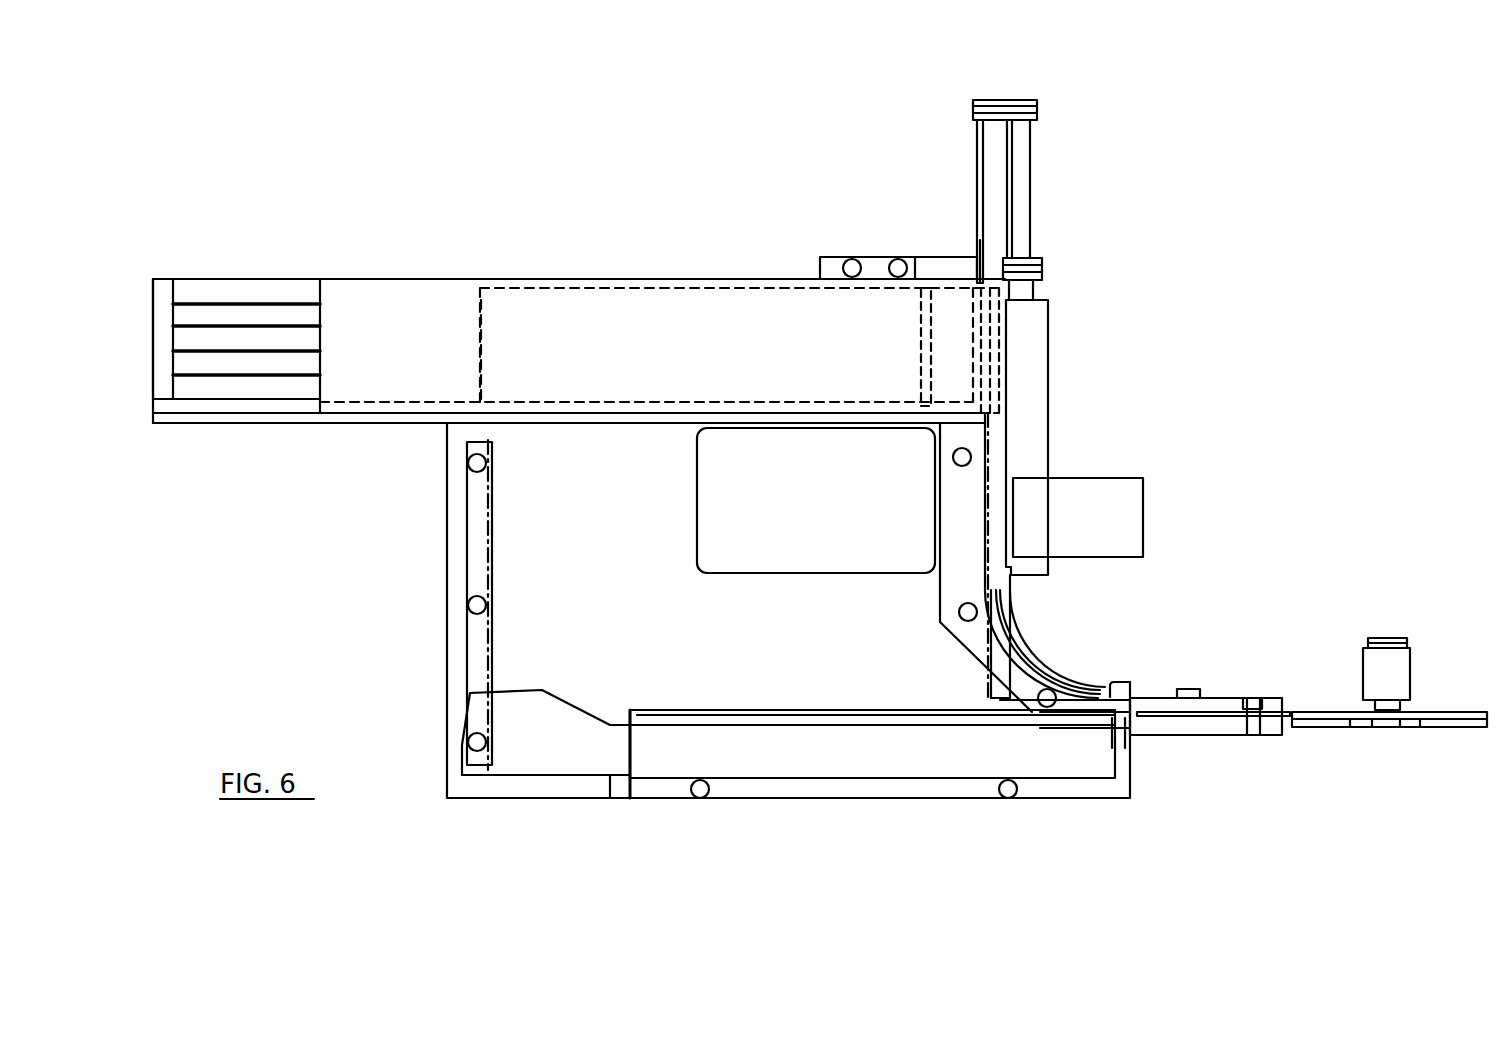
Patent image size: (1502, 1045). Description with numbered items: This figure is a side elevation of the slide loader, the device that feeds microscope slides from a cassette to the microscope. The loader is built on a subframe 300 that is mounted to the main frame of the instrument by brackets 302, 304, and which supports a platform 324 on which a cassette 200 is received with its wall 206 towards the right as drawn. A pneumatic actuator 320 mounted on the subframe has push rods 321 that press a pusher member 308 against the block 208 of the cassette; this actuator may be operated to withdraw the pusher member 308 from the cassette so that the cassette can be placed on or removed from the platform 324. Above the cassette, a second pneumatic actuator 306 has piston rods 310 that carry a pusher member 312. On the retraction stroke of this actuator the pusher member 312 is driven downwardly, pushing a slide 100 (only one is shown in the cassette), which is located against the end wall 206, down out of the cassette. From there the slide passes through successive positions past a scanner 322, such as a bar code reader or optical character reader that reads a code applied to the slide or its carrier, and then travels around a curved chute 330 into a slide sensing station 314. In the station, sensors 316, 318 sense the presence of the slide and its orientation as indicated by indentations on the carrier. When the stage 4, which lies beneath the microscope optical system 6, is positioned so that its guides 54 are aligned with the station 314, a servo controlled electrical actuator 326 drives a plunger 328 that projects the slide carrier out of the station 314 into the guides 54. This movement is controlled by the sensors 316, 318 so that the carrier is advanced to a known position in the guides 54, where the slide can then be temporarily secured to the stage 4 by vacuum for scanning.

The stage 4 is at (1397, 731).
The microscope optical system 6 is at (1363, 672).
The guides 54 is at (1467, 711).
The slide 100 is at (975, 252).
The cassette 200 is at (473, 332).
The wall 206 is at (1007, 337).
The block 208 is at (952, 306).
The subframe 300 is at (447, 632).
The bracket 302 is at (467, 514).
The bracket 304 is at (983, 627).
The pneumatic actuator 306 is at (1049, 353).
The pusher member 308 is at (833, 262).
The piston rods 310 is at (1020, 212).
The pusher member 312 is at (975, 160).
The slide sensing station 314 is at (1233, 737).
The sensor 316 is at (1190, 690).
The sensor 318 is at (1253, 696).
The pneumatic actuator 320 is at (162, 274).
The push rods 321 is at (300, 320).
The scanner 322 is at (1090, 477).
The platform 324 is at (403, 402).
The servo controlled electrical actuator 326 is at (770, 710).
The plunger 328 is at (1105, 720).
The curved chute 330 is at (1110, 697).